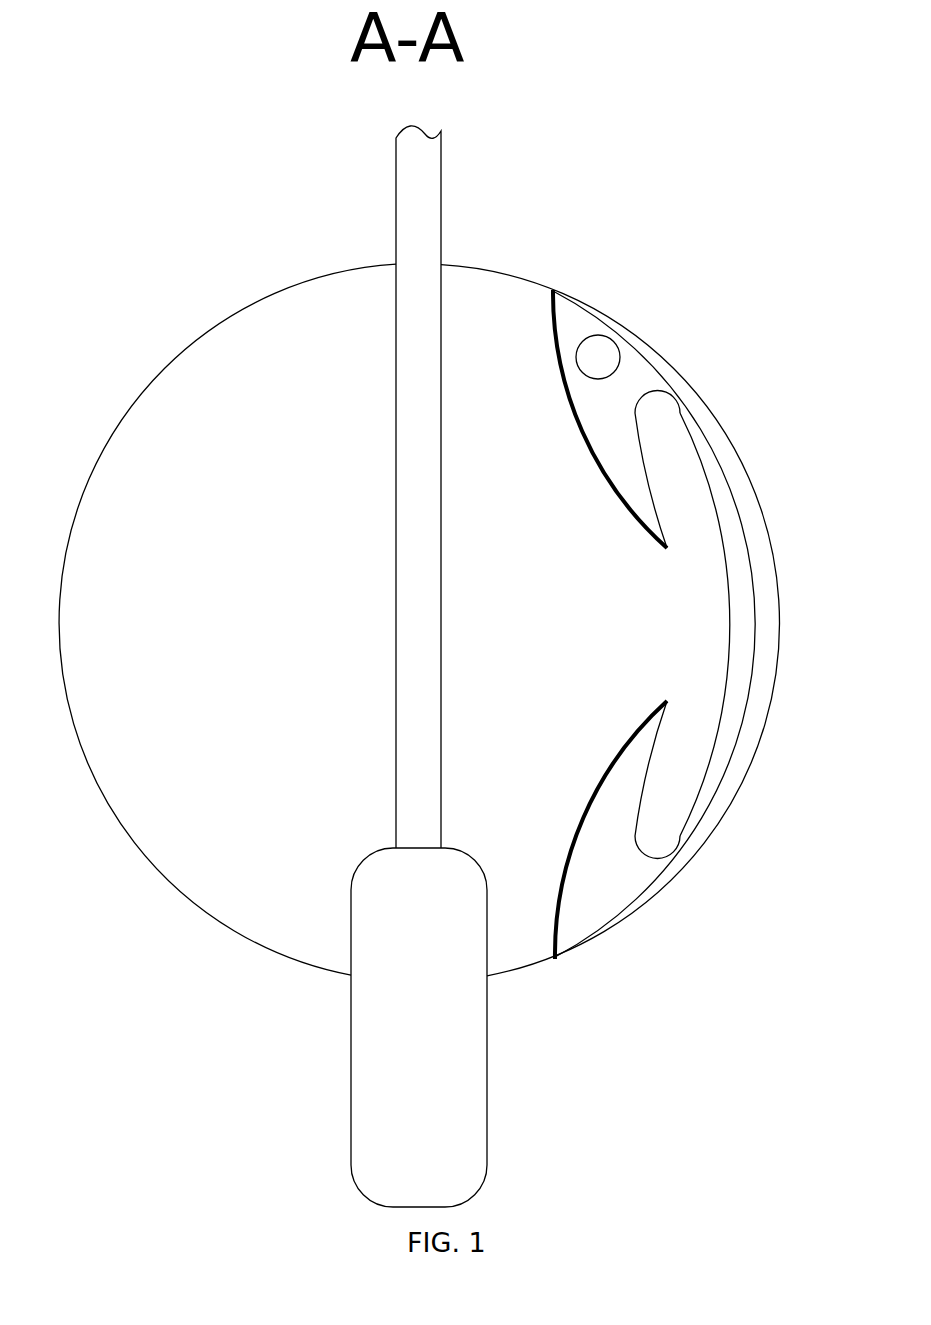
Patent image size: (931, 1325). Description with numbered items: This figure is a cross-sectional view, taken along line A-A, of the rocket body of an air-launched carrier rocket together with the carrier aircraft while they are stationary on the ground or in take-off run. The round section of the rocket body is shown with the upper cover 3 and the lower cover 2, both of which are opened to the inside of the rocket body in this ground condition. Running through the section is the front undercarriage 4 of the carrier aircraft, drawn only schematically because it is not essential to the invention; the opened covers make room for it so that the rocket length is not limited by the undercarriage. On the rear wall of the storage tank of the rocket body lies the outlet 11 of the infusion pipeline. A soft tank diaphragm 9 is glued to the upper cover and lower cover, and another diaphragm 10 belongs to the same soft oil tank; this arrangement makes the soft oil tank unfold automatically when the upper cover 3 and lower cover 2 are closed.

The lower cover 2 is at (567, 893).
The upper cover 3 is at (552, 290).
The front undercarriage 4 is at (418, 1073).
The soft tank diaphragm 9 is at (640, 858).
The diaphragm of the soft oil tank 10 is at (716, 803).
The outlet of the infusion pipeline 11 is at (598, 357).